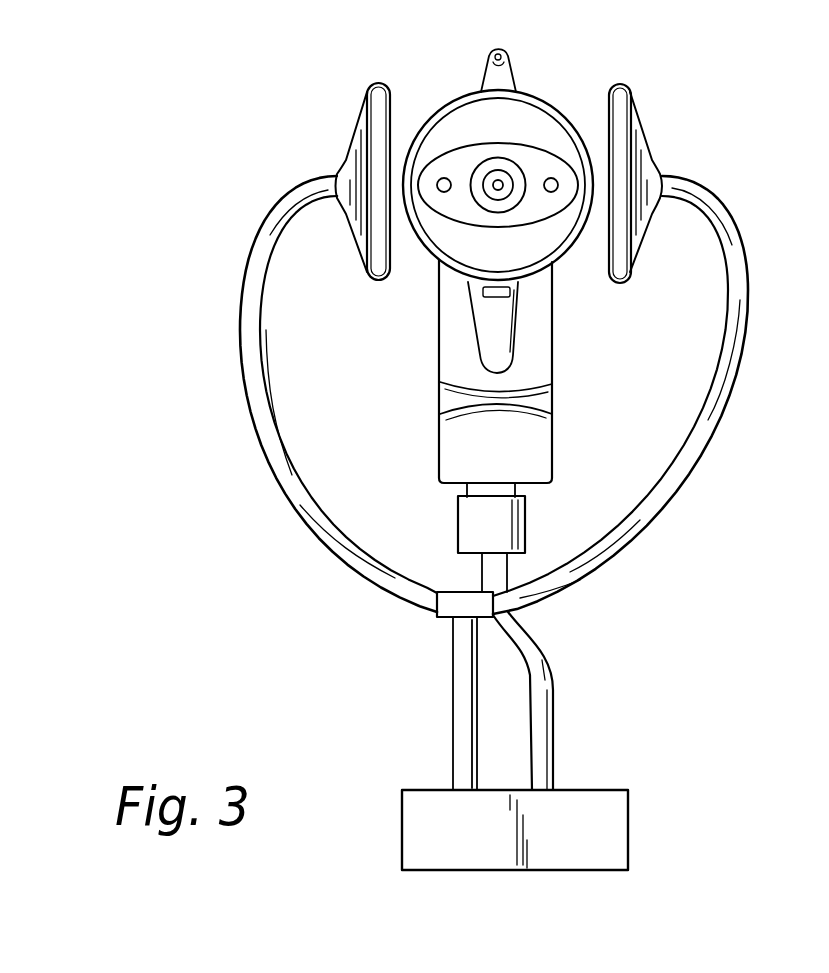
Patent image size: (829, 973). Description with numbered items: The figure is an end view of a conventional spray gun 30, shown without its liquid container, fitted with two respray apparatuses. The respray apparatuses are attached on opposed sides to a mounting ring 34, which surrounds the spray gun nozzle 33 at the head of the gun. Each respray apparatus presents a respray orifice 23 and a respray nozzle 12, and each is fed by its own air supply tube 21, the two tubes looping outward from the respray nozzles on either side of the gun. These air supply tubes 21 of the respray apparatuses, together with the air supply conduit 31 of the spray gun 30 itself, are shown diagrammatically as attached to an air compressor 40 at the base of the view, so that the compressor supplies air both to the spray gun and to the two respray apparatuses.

The respray nozzle 12 is at (350, 137).
The air supply tube 21 is at (291, 511).
The respray orifice 23 is at (383, 83).
The spray gun 30 is at (430, 318).
The air supply conduit of the spray gun 31 is at (530, 652).
The spray gun nozzle 33 is at (495, 183).
The mounting ring 34 is at (553, 103).
The air compressor 40 is at (628, 815).